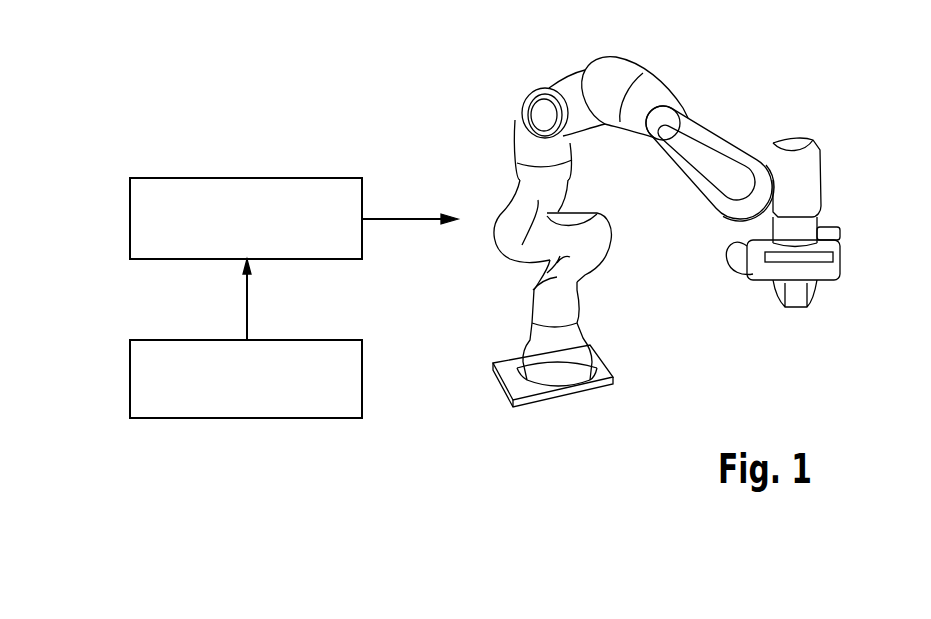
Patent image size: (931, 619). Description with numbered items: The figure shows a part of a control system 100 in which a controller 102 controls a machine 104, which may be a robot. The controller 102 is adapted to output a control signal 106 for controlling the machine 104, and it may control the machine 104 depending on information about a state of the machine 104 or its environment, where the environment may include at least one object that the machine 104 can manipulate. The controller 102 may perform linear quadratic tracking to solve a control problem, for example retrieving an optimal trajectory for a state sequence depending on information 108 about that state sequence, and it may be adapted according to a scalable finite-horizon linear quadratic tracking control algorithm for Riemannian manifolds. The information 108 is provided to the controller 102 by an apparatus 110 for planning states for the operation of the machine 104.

The control system 100 is at (163, 97).
The controller 102 is at (130, 218).
The machine 104 is at (614, 66).
The control signal 106 is at (407, 217).
The information 108 is at (247, 297).
The apparatus 110 is at (130, 384).